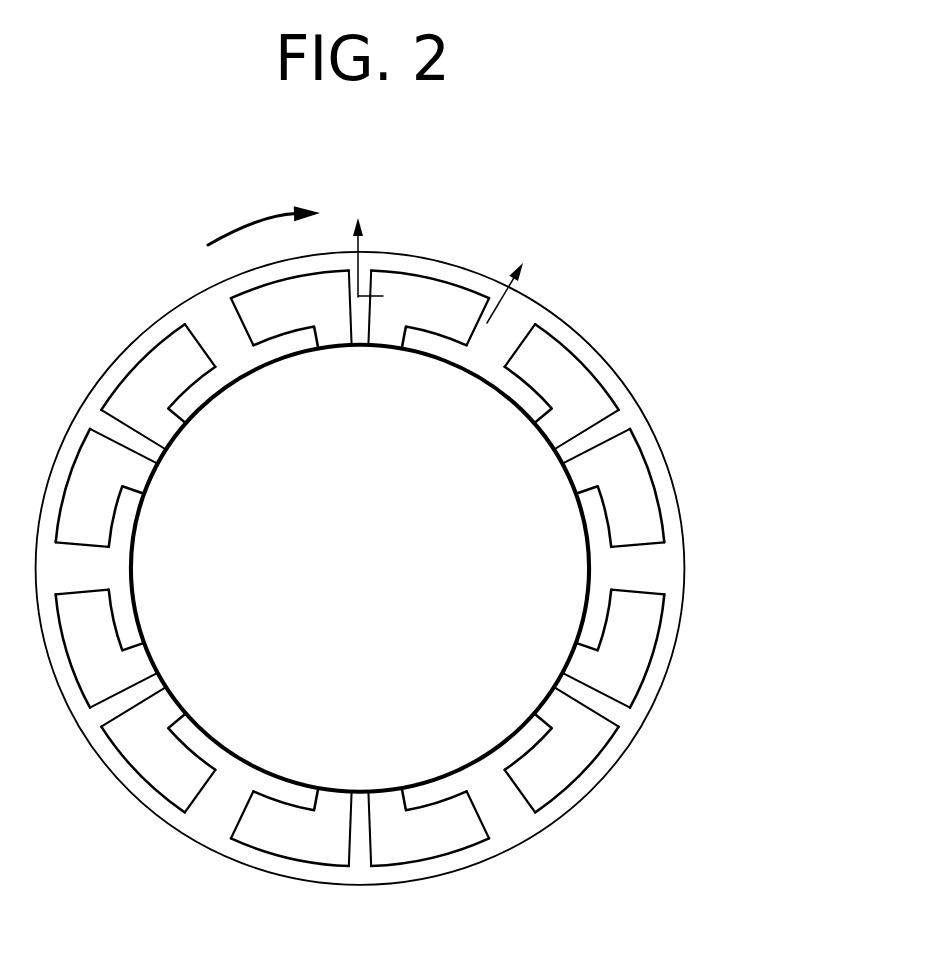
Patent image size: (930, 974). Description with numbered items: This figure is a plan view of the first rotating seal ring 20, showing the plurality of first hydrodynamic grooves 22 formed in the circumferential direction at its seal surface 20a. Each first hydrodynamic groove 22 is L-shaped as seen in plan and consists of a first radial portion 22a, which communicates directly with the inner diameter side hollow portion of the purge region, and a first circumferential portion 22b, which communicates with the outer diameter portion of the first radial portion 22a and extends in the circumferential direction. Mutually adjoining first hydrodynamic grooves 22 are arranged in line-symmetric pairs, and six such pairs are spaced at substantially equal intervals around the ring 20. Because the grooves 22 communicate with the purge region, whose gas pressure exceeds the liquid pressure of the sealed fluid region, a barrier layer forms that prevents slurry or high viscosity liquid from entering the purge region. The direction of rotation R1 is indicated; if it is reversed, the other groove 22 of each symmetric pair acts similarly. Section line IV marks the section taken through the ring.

The first rotating seal ring 20 is at (409, 522).
The seal surface 20a is at (648, 560).
The first hydrodynamic groove 22 is at (419, 513).
The first radial portion 22a is at (388, 325).
The first circumferential portion 22b is at (461, 317).
The direction of rotation R1 is at (258, 220).
The section line IV- IV is at (369, 182).